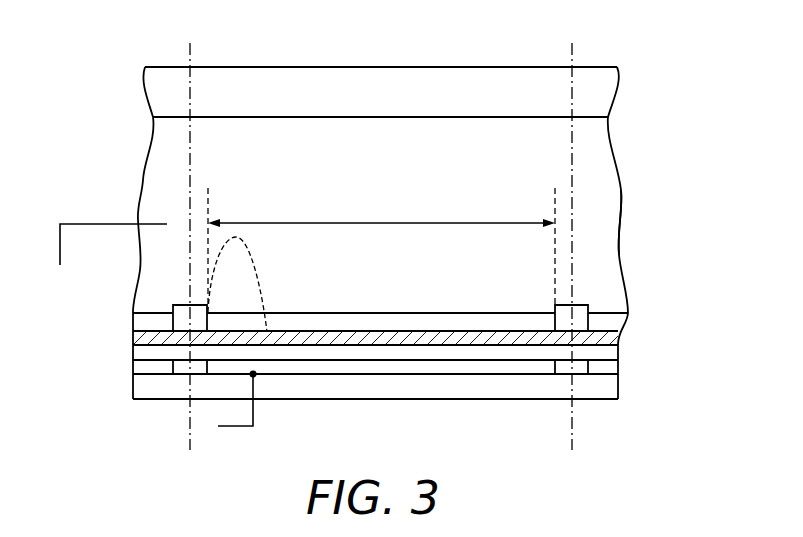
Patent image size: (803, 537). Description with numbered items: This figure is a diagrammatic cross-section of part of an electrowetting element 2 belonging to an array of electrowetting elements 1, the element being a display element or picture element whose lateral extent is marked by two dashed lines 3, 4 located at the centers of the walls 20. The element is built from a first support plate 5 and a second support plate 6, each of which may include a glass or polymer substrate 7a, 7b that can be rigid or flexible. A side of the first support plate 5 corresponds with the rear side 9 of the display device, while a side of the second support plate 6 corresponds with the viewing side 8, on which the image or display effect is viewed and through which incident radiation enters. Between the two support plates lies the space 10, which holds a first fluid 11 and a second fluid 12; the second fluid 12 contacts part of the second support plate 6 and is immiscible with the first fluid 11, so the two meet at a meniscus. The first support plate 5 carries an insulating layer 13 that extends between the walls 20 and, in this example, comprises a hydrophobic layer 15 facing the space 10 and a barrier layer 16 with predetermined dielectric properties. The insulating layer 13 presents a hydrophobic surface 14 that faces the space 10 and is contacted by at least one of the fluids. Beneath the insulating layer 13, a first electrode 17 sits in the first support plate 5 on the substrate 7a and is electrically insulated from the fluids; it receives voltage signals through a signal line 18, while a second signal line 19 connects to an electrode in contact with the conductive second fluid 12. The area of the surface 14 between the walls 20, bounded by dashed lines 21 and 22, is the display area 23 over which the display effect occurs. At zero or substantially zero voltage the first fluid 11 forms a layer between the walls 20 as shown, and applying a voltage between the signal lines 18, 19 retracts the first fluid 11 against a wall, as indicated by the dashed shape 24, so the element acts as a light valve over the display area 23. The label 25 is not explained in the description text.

The array of electrowetting elements 1 is at (690, 39).
The electrowetting element 2 is at (338, 52).
The dashed line 3 is at (190, 53).
The dashed line 4 is at (572, 53).
The first support plate 5 is at (672, 305).
The second support plate 6 is at (631, 66).
The substrate 7a is at (598, 388).
The substrate 7b is at (517, 90).
The viewing side 8 is at (281, 66).
The rear side 9 is at (340, 399).
The space 10 is at (446, 130).
The first fluid 11 is at (500, 318).
The second fluid 12 is at (622, 197).
The insulating layer 13 is at (630, 331).
The surface 14 is at (438, 318).
The hydrophobic layer 15 is at (368, 340).
The barrier layer 16 is at (302, 350).
The first electrode 17 is at (447, 372).
The signal line 18 is at (237, 427).
The second signal line 19 is at (78, 224).
The walls 20 is at (182, 316).
The dashed line 21 is at (210, 192).
The dashed line 22 is at (553, 193).
The display area 23 is at (381, 211).
The dashed shape 24 is at (218, 257).
The gap 25 is at (317, 117).